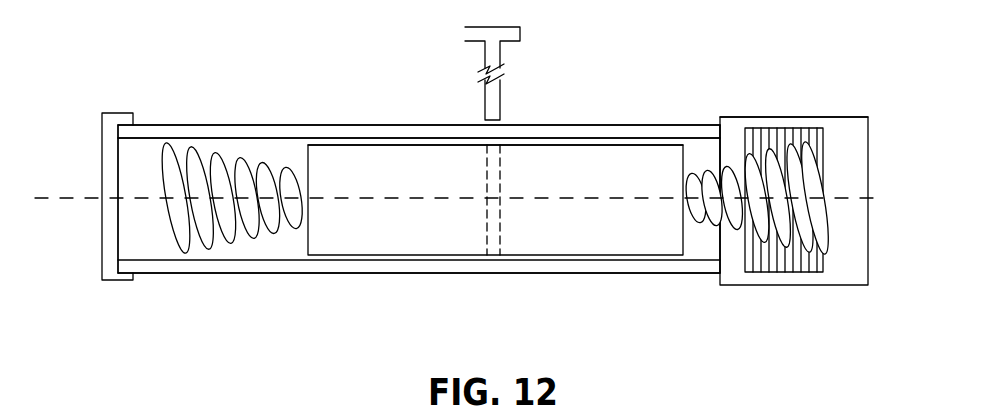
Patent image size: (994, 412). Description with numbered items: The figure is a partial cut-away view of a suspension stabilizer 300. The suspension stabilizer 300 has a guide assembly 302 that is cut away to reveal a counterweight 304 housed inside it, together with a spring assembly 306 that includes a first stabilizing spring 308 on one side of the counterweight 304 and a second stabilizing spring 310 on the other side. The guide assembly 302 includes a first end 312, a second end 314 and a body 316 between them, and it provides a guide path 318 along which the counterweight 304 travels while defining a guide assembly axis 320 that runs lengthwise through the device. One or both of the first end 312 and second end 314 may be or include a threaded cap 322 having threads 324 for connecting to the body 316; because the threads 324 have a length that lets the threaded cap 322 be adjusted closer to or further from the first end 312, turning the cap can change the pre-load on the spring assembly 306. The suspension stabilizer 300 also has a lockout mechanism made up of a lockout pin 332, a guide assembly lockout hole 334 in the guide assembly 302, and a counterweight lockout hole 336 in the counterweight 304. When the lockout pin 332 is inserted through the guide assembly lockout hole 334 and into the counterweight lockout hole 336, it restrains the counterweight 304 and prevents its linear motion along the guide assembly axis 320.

The suspension stabilizer 300 is at (598, 67).
The guide assembly 302 is at (668, 118).
The counterweight 304 is at (562, 152).
The spring assembly 306 is at (668, 288).
The first stabilizing spring 308 is at (183, 150).
The second stabilizing spring 310 is at (738, 252).
The first end 312 is at (102, 266).
The second end 314 is at (836, 287).
The body 316 is at (697, 275).
The guide path 318 is at (261, 142).
The guide assembly axis 320 is at (878, 199).
The threaded cap 322 is at (831, 110).
The threads 324 is at (778, 273).
The lockout pin 332 is at (498, 72).
The guide assembly lockout hole 334 is at (498, 150).
The counterweight lockout hole 336 is at (487, 148).